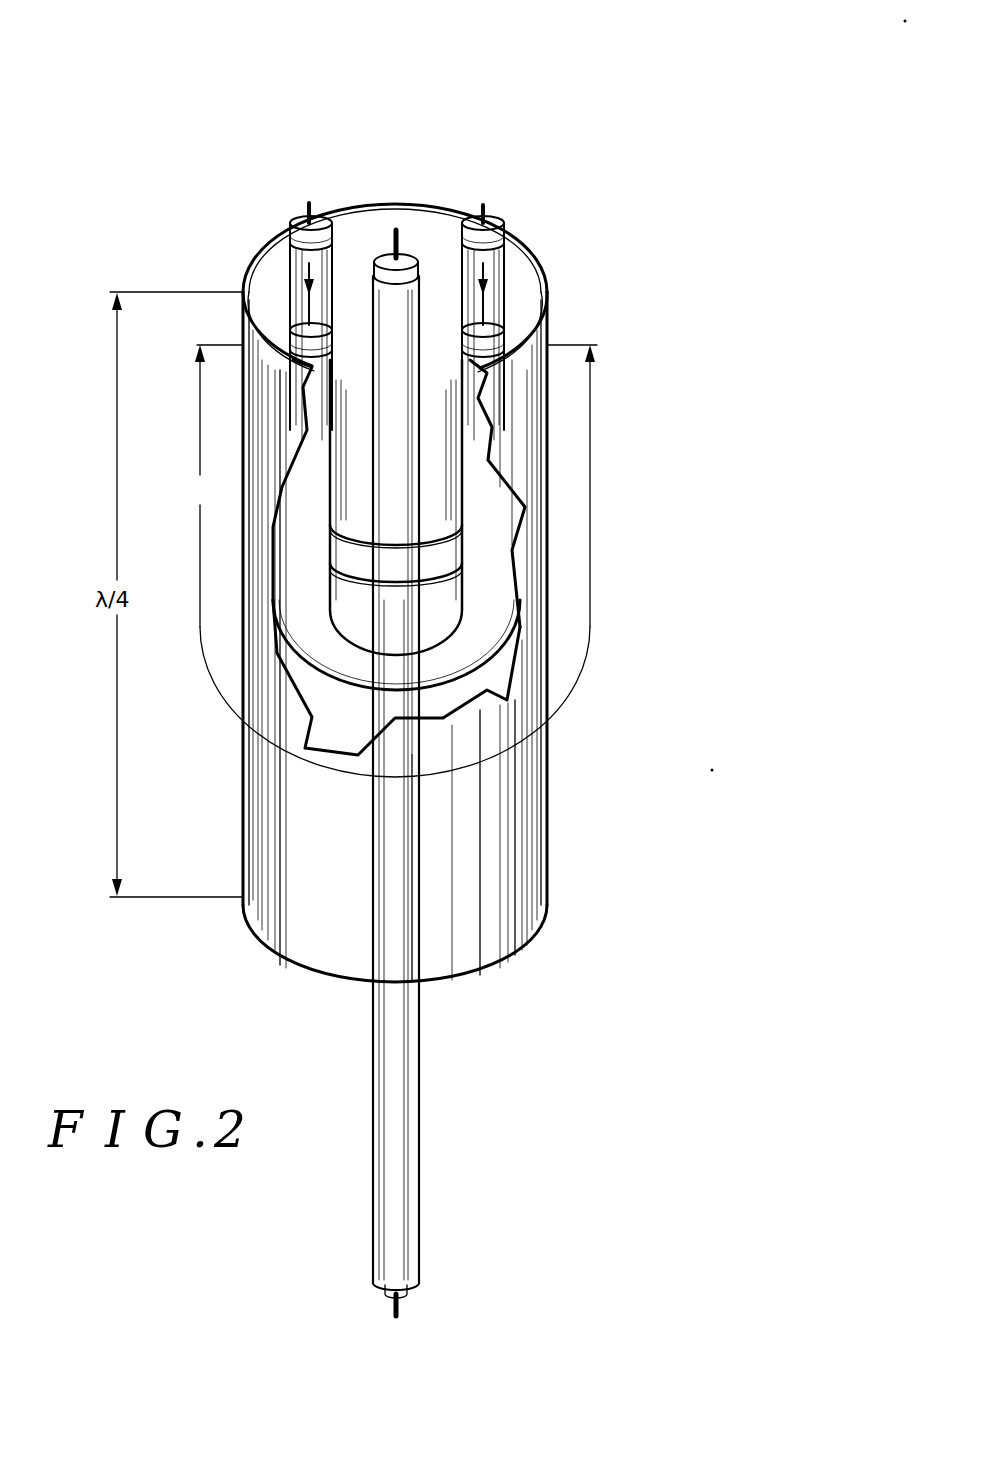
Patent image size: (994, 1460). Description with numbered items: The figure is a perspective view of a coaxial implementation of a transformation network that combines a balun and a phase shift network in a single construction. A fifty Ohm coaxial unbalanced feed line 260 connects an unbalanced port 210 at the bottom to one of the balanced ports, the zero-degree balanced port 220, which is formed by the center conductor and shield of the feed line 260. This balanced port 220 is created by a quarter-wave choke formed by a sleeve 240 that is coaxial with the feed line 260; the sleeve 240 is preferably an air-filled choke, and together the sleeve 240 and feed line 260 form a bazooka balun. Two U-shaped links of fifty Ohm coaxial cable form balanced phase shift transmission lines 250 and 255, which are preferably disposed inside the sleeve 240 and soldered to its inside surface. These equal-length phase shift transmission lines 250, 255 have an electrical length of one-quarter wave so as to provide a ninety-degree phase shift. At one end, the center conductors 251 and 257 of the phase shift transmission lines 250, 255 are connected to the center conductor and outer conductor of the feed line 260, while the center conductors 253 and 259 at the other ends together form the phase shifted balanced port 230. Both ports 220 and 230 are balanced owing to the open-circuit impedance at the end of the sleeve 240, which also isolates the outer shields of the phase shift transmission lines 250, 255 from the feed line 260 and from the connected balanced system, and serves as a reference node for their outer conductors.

The unbalanced port 210 is at (396, 1318).
The balanced port 220 is at (309, 188).
The phase shifted balanced port 230 is at (311, 215).
The sleeve 240 is at (547, 330).
The balanced phase shift transmission line 250 is at (500, 322).
The center conductor 251 is at (488, 218).
The center conductor 253 is at (306, 200).
The balanced phase shift transmission line 255 is at (505, 595).
The center conductor 257 is at (310, 326).
The center conductor 259 is at (597, 347).
The unbalanced feed line 260 is at (420, 708).